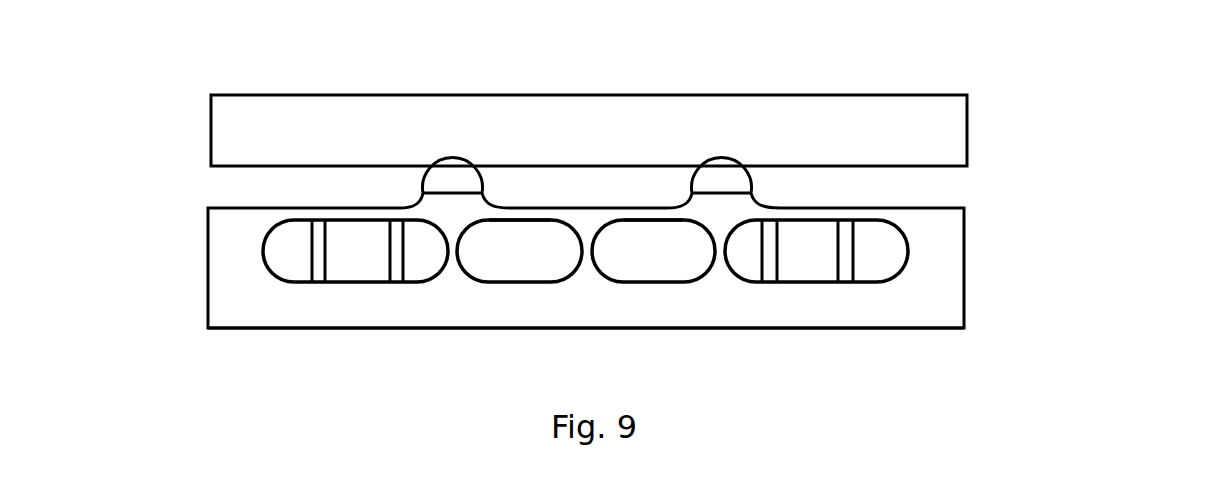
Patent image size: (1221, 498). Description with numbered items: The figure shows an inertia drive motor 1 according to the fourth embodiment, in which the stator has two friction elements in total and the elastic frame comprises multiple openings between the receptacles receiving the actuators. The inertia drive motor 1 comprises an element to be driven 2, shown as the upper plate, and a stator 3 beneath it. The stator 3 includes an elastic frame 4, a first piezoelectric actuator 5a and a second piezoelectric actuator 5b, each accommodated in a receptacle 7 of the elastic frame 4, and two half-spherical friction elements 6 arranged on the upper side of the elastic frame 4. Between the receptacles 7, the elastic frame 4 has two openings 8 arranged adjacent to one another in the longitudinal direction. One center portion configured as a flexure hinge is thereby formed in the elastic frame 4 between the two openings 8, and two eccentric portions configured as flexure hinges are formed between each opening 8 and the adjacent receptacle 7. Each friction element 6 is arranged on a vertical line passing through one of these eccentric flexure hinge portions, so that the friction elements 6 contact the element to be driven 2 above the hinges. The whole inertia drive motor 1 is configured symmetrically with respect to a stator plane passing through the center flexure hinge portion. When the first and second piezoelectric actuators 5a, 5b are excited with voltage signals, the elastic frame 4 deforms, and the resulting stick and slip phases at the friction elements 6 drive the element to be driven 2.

The inertia drive motor 1 is at (1102, 96).
The element to be driven 2 is at (973, 125).
The stator 3 is at (1024, 242).
The elastic frame 4 is at (948, 262).
The first piezoelectric actuator 5a is at (358, 250).
The second piezoelectric actuator 5b is at (802, 255).
The friction element 6 is at (445, 180).
The receptacle 7 is at (423, 243).
The opening 8 is at (520, 233).